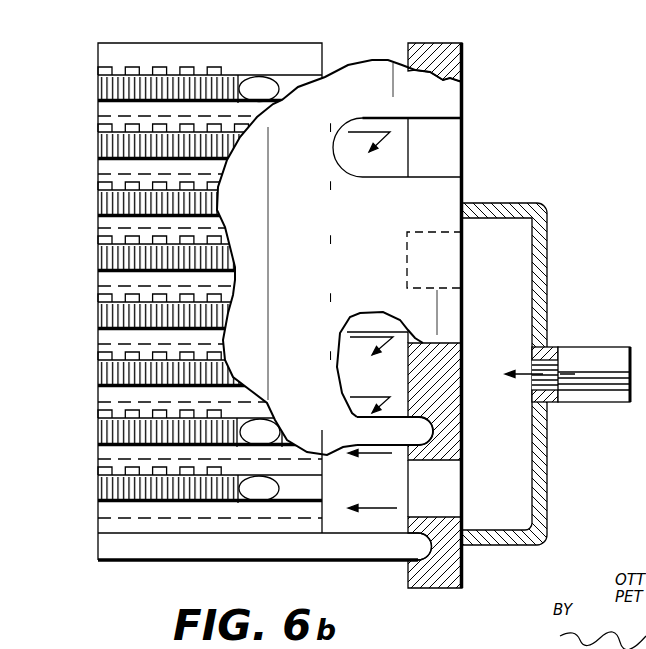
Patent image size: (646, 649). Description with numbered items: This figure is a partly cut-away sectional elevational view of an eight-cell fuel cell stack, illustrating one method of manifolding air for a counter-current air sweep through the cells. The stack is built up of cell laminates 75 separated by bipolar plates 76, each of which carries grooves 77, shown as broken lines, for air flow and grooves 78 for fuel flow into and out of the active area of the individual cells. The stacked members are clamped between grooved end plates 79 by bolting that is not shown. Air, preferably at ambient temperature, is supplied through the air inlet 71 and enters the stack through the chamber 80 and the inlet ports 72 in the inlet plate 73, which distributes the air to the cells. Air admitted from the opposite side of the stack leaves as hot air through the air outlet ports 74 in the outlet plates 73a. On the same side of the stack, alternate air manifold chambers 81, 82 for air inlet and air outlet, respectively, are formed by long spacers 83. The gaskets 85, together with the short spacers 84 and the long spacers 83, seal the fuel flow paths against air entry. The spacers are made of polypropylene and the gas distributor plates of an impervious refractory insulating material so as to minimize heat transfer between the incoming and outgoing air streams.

The air inlet 71 is at (573, 362).
The inlet ports 72 is at (455, 261).
The inlet plate 73 is at (460, 413).
The outlet plates 73a is at (456, 104).
The air outlet ports 74 is at (398, 160).
The cell laminates 75 is at (172, 92).
The bipolar plates 76 is at (103, 117).
The grooves 77 is at (100, 348).
The grooves 78 is at (133, 412).
The grooved end plates 79 is at (120, 58).
The chamber 80 is at (521, 470).
The air manifold chamber 81 is at (372, 518).
The air manifold chamber 82 is at (378, 163).
The long spacers 83 is at (418, 434).
The short spacers 84 is at (312, 497).
The gaskets 85 is at (262, 432).